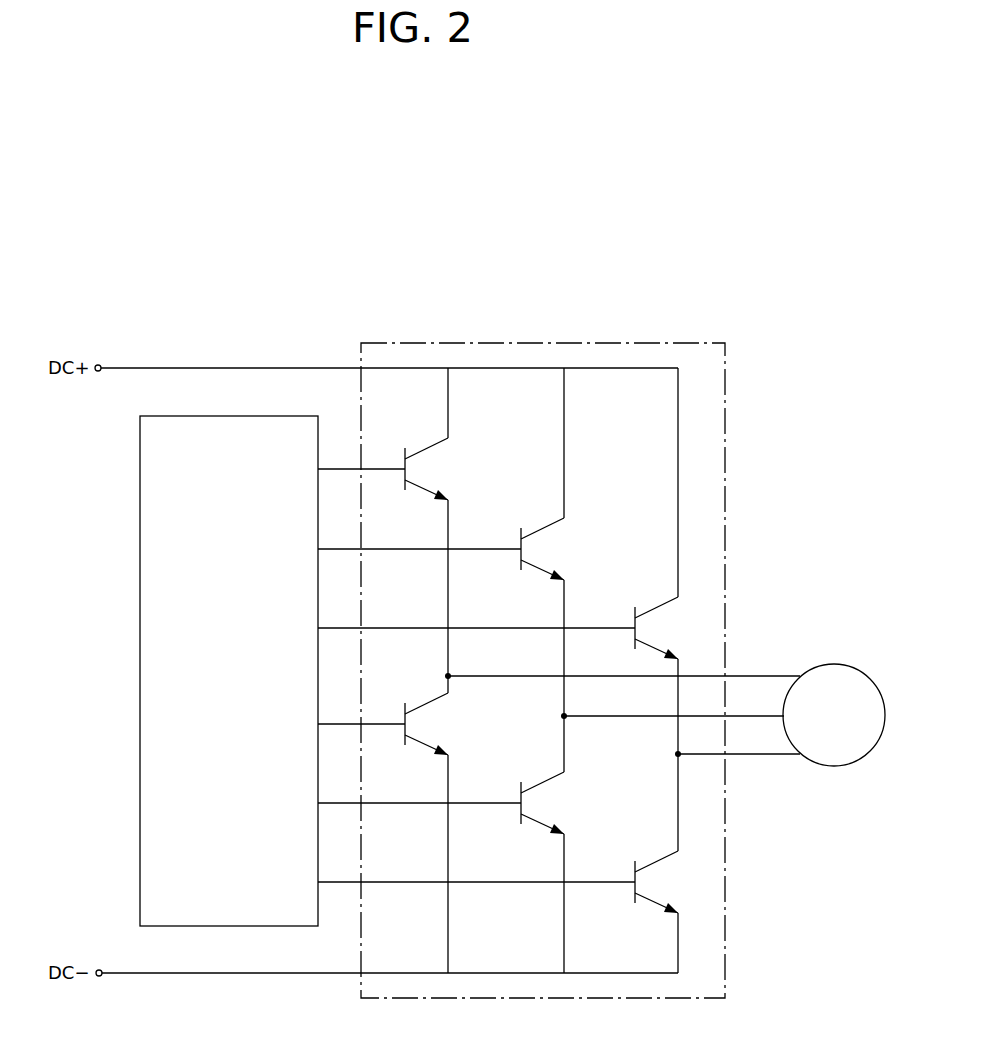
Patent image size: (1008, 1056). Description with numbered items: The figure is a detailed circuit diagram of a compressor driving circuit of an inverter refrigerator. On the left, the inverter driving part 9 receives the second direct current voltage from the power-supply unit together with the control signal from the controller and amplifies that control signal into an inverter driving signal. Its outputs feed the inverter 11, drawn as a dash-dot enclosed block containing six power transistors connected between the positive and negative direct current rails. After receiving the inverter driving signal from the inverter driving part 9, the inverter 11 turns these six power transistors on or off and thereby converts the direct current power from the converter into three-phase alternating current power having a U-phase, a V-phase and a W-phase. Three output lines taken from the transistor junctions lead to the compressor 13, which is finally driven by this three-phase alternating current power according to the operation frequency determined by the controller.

The inverter driving part 9 is at (140, 597).
The inverter 11 is at (725, 478).
The compressor 13 is at (858, 669).